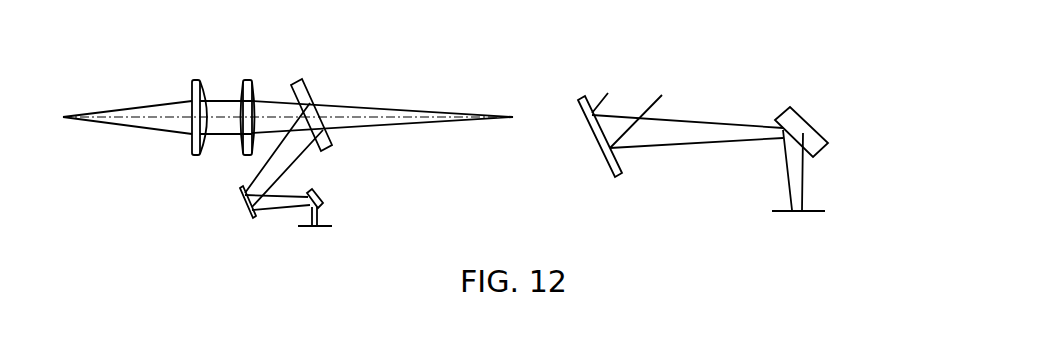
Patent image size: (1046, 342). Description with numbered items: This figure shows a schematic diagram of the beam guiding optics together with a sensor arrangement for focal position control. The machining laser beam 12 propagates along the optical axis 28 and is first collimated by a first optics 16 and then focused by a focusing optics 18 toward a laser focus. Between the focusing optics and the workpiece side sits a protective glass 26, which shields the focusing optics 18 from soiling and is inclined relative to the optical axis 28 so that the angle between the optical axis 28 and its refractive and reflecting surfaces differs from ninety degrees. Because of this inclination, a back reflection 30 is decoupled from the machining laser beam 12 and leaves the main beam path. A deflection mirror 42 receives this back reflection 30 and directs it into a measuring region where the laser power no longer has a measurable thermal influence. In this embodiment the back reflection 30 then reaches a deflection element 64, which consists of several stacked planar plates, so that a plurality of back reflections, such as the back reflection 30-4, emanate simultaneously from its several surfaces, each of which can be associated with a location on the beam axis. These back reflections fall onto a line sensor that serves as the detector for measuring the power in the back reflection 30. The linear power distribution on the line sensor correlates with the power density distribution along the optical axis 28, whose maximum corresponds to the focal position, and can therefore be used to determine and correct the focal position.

The machining laser beam 12 is at (70, 116).
The first optics 16 is at (197, 81).
The focusing optics 18 is at (248, 80).
The protective glass 26 is at (300, 82).
The optical axis 28 is at (375, 112).
The back reflection 30 is at (267, 172).
The deflection mirror 42 is at (243, 205).
The deflection element 64 is at (320, 193).
The back reflection 30-4 is at (793, 172).